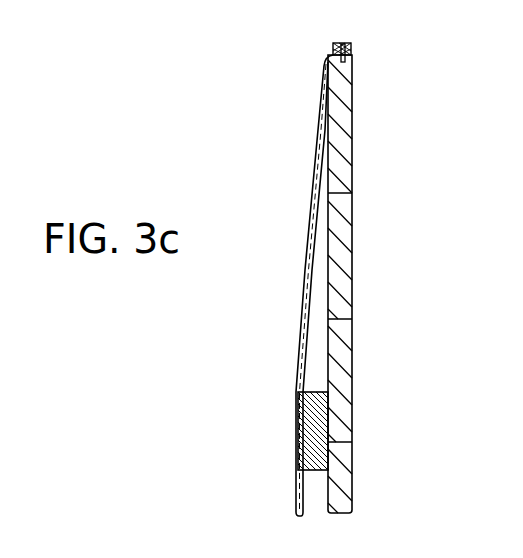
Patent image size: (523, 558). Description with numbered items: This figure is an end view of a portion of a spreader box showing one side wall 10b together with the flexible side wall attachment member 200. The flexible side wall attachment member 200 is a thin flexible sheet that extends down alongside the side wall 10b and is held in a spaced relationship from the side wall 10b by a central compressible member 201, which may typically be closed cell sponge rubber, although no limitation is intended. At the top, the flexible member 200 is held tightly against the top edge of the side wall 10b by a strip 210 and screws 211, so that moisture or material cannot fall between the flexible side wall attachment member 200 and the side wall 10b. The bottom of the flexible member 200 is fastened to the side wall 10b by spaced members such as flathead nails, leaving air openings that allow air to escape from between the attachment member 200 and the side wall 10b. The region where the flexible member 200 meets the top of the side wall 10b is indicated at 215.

The panel assembly 10b is at (404, 83).
The thin panel 200 is at (318, 152).
The hatched block 201 is at (318, 411).
The cap 210 is at (333, 47).
The pin 211 is at (343, 43).
The beam 215 is at (331, 60).